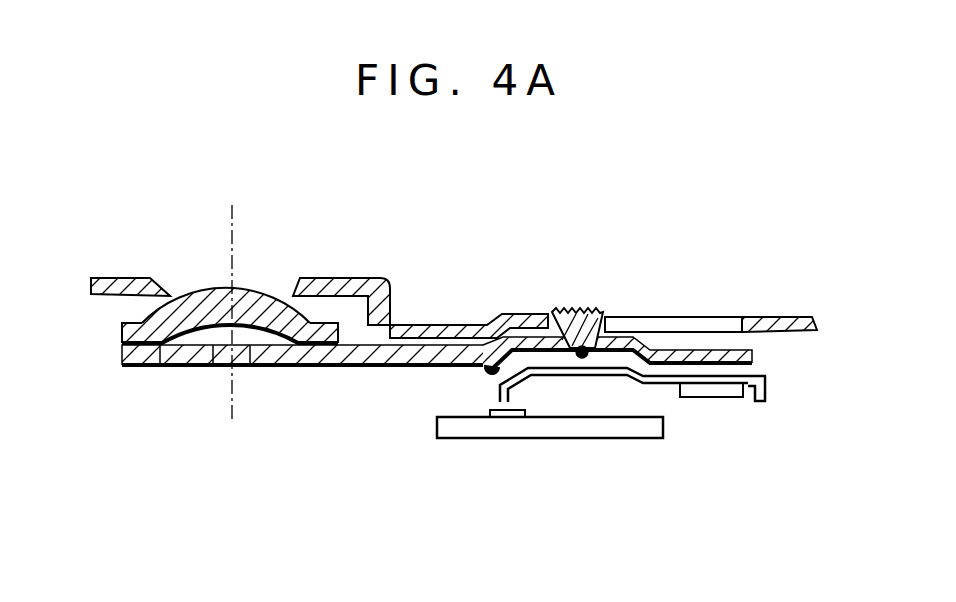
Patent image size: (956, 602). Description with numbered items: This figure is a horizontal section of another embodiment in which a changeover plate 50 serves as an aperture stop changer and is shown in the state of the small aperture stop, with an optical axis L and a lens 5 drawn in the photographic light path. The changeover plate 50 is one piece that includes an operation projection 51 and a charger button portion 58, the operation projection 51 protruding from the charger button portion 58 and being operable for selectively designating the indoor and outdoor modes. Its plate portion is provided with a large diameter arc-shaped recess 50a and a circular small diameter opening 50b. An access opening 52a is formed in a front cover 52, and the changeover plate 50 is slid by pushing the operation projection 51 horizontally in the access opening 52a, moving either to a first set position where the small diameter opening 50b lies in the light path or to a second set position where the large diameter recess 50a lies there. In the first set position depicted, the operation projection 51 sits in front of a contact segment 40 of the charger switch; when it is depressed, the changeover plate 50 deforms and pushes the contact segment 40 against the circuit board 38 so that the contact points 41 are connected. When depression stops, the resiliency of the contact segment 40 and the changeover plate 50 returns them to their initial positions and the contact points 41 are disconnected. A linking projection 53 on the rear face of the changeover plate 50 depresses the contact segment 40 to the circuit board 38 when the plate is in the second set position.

The optical axis L is at (232, 232).
The lens 5 is at (262, 290).
The changeover plate 50 is at (283, 428).
The large diameter arc-shaped recess 50a is at (150, 365).
The small diameter opening 50b is at (222, 365).
The operation projection 51 is at (580, 312).
The front cover 52 is at (787, 318).
The access opening 52a is at (693, 322).
The linking projection 53 is at (490, 371).
The charger button portion 58 is at (628, 342).
The contact segment 40 is at (610, 372).
The contact points 41 is at (517, 418).
The circuit board 38 is at (467, 438).